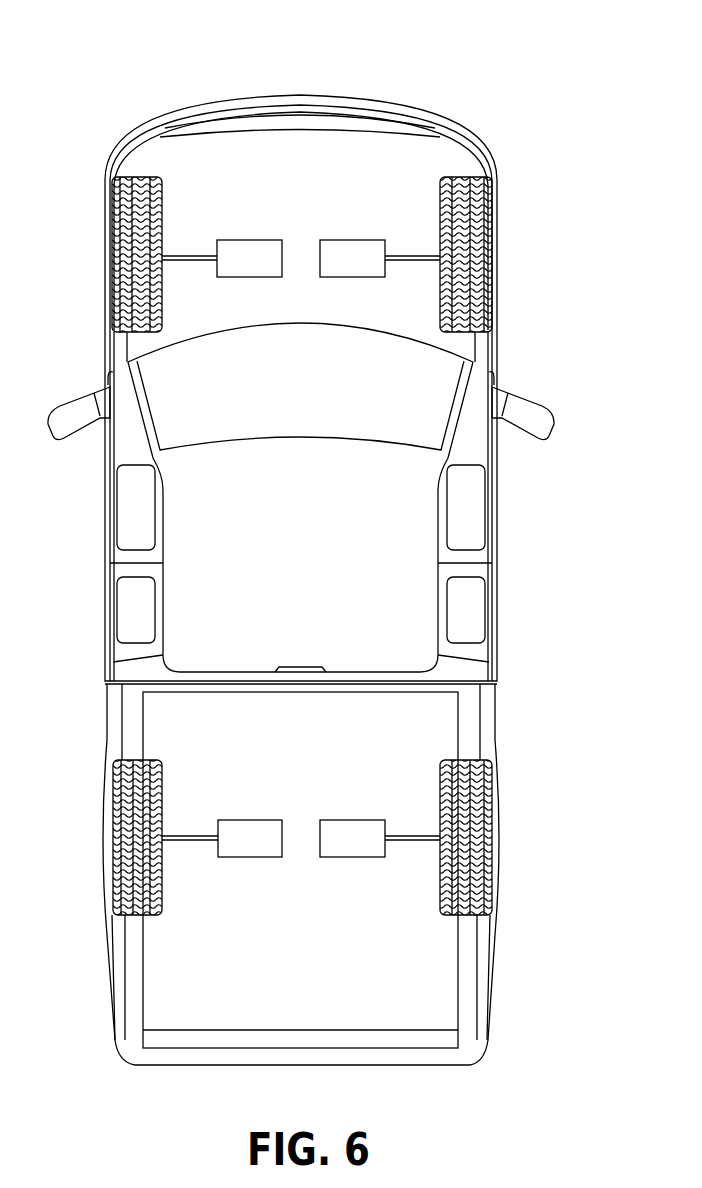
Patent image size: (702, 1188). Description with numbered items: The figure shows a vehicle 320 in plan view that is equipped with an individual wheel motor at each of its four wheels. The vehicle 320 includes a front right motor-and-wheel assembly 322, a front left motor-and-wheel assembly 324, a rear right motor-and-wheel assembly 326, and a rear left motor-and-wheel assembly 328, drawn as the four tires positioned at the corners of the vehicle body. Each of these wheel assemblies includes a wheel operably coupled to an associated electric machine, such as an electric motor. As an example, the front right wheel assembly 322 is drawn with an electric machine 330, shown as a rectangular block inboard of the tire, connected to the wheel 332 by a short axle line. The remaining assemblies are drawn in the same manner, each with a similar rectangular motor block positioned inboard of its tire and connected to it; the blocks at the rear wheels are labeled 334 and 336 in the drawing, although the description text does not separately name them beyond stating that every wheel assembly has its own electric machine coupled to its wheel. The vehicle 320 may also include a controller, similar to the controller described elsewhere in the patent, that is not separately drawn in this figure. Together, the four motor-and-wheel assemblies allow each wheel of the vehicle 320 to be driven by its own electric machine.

The vehicle 320 is at (468, 79).
The front right motor-and-wheel assembly 322 is at (117, 247).
The front left motor-and-wheel assembly 324 is at (480, 253).
The rear right motor-and-wheel assembly 326 is at (115, 837).
The rear left motor-and-wheel assembly 328 is at (480, 843).
The electric machine 330 is at (253, 240).
The wheel 332 is at (350, 240).
The rear left wheel motor 334 is at (252, 820).
The rear right wheel motor 336 is at (350, 820).